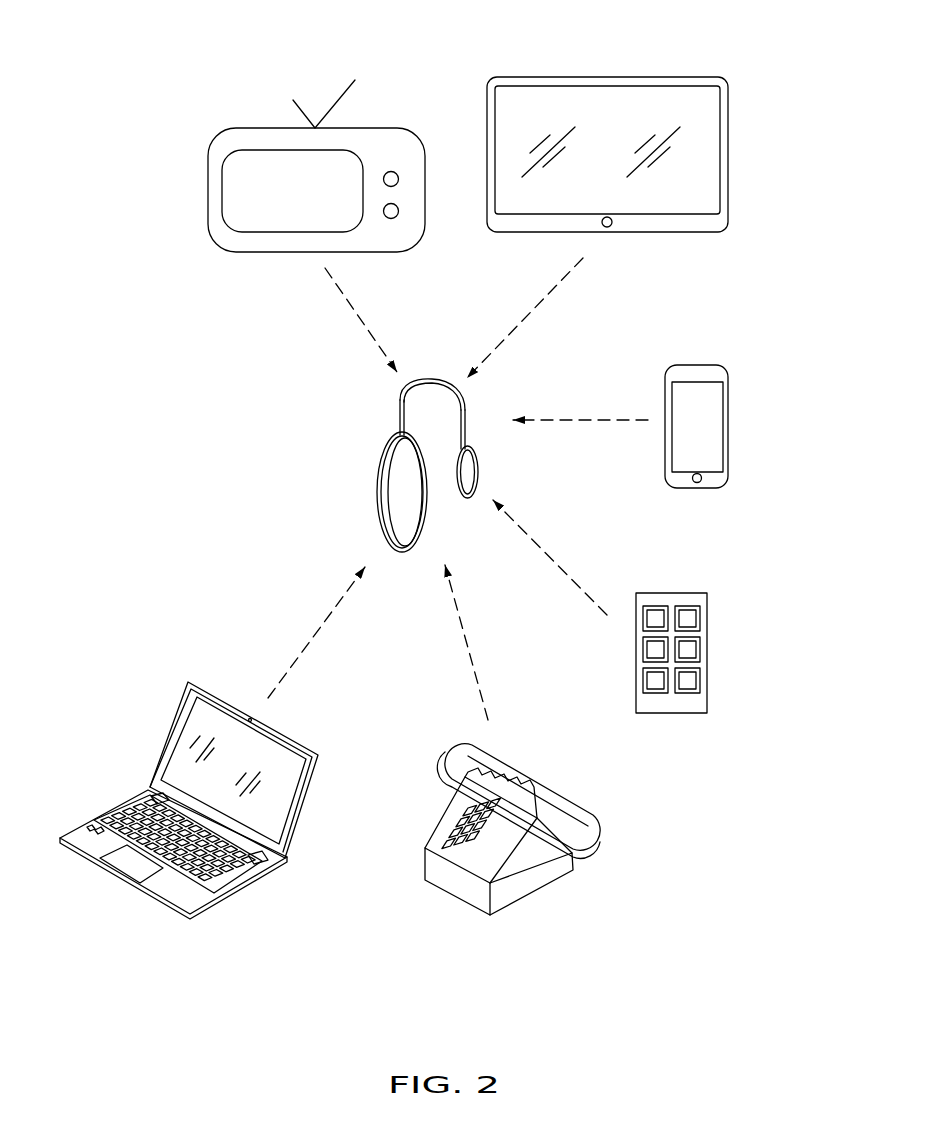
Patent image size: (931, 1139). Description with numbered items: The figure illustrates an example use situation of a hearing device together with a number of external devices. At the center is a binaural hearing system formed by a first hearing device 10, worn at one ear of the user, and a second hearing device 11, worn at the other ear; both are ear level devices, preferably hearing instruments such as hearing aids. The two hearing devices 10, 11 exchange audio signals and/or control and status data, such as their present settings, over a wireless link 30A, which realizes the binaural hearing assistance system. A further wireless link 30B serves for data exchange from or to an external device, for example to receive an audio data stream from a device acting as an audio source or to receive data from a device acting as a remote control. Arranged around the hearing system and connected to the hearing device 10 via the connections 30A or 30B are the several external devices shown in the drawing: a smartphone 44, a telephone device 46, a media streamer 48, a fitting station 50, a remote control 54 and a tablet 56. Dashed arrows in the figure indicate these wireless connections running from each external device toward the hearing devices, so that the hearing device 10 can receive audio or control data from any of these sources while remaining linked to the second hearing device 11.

The first hearing device 10 is at (392, 475).
The second hearing device 11 is at (467, 468).
The wireless link 30A is at (342, 288).
The wireless link 30B is at (613, 420).
The smartphone 44 is at (710, 440).
The telephone device 46 is at (528, 873).
The media streamer 48 is at (373, 145).
The fitting station 50 is at (172, 888).
The remote control 54 is at (693, 650).
The tablet 56 is at (688, 102).